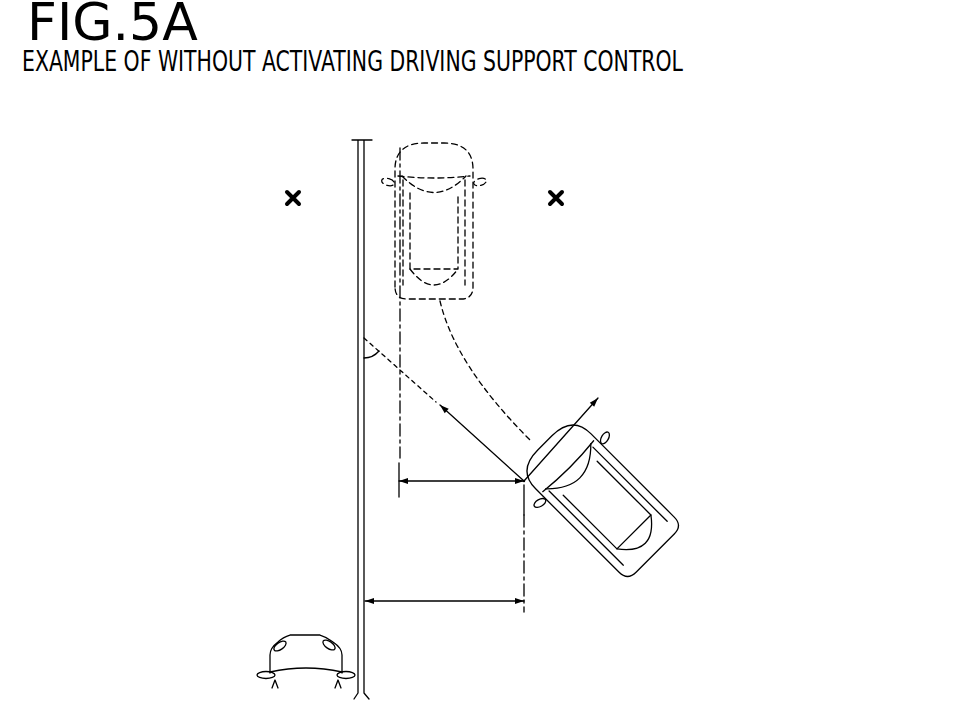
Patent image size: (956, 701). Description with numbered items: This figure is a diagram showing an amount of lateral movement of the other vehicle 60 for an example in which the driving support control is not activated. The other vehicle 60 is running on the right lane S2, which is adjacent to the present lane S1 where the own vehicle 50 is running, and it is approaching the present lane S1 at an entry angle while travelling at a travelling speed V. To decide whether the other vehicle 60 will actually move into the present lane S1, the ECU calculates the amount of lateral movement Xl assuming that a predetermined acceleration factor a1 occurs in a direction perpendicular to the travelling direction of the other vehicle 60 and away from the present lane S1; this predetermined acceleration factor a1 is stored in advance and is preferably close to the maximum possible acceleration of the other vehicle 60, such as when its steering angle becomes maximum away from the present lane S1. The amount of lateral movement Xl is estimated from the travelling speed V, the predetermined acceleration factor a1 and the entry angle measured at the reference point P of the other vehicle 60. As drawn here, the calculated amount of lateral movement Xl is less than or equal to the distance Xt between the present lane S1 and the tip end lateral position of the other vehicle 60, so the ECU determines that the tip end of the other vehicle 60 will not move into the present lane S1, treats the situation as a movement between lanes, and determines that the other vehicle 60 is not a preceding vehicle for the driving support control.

The other vehicle 60 is at (473, 162).
The other vehicle 50 is at (298, 634).
The present lane S1 is at (283, 198).
The right lane S2 is at (566, 197).
The reference point of vehicle P is at (400, 148).
The travelling speed of the other vehicle V is at (478, 441).
The predetermined acceleration factor a1 is at (575, 428).
The amount of lateral movement Xl is at (461, 493).
The distance between the present lane and the tip end lateral position Xt is at (444, 612).